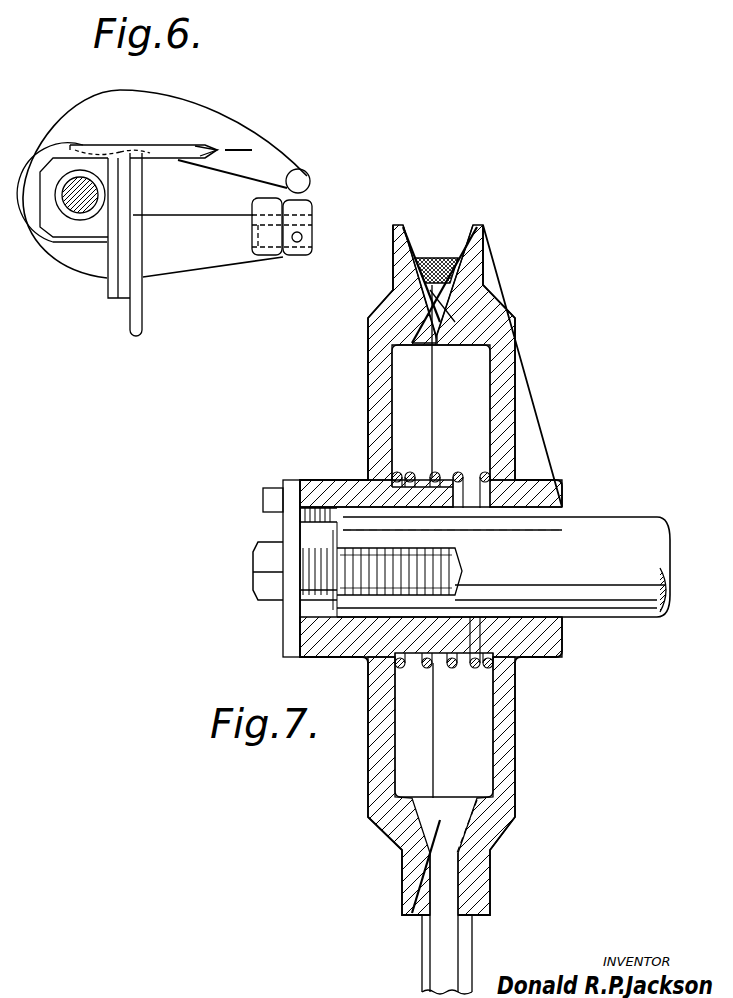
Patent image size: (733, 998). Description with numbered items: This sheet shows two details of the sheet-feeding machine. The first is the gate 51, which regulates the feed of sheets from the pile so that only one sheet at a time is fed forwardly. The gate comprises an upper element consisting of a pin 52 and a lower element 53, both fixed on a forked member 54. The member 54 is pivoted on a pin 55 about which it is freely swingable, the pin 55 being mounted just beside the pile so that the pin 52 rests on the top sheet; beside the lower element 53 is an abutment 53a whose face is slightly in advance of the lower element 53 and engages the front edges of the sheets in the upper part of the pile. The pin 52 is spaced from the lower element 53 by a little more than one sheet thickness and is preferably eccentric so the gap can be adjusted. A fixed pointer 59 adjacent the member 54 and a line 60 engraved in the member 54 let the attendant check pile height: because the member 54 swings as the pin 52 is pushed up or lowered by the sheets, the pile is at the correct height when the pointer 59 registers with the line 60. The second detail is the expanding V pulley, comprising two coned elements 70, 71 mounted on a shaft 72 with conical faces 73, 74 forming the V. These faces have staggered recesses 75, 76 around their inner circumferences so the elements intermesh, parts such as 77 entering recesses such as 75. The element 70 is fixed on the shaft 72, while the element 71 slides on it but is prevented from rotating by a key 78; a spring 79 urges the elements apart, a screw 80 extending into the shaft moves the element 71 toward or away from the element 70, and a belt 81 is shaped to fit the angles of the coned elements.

In FIG. 6, the gate 51 is at (86, 95).
In FIG. 6, the pin 52 is at (300, 178).
In FIG. 6, the lower element 53 is at (302, 236).
In FIG. 6, the abutment 53a is at (256, 236).
In FIG. 6, the forked member 54 is at (165, 113).
In FIG. 6, the pin 55 is at (97, 198).
In FIG. 6, the fixed pointer 59 is at (202, 148).
In FIG. 6, the line 60 is at (240, 148).
In FIG. 7, the coned element 70 is at (493, 340).
In FIG. 7, the coned element 71 is at (366, 373).
In FIG. 7, the shaft 72 is at (485, 562).
In FIG. 7, the conical face 73 is at (465, 233).
In FIG. 7, the conical face 74 is at (417, 245).
In FIG. 7, the recess 75 is at (488, 280).
In FIG. 7, the recess 76 is at (418, 323).
In FIG. 7, the part 77 is at (443, 262).
In FIG. 7, the key 78 is at (355, 510).
In FIG. 7, the spring 79 is at (475, 670).
In FIG. 7, the screw 80 is at (317, 597).
In FIG. 7, the belt 81 is at (447, 263).